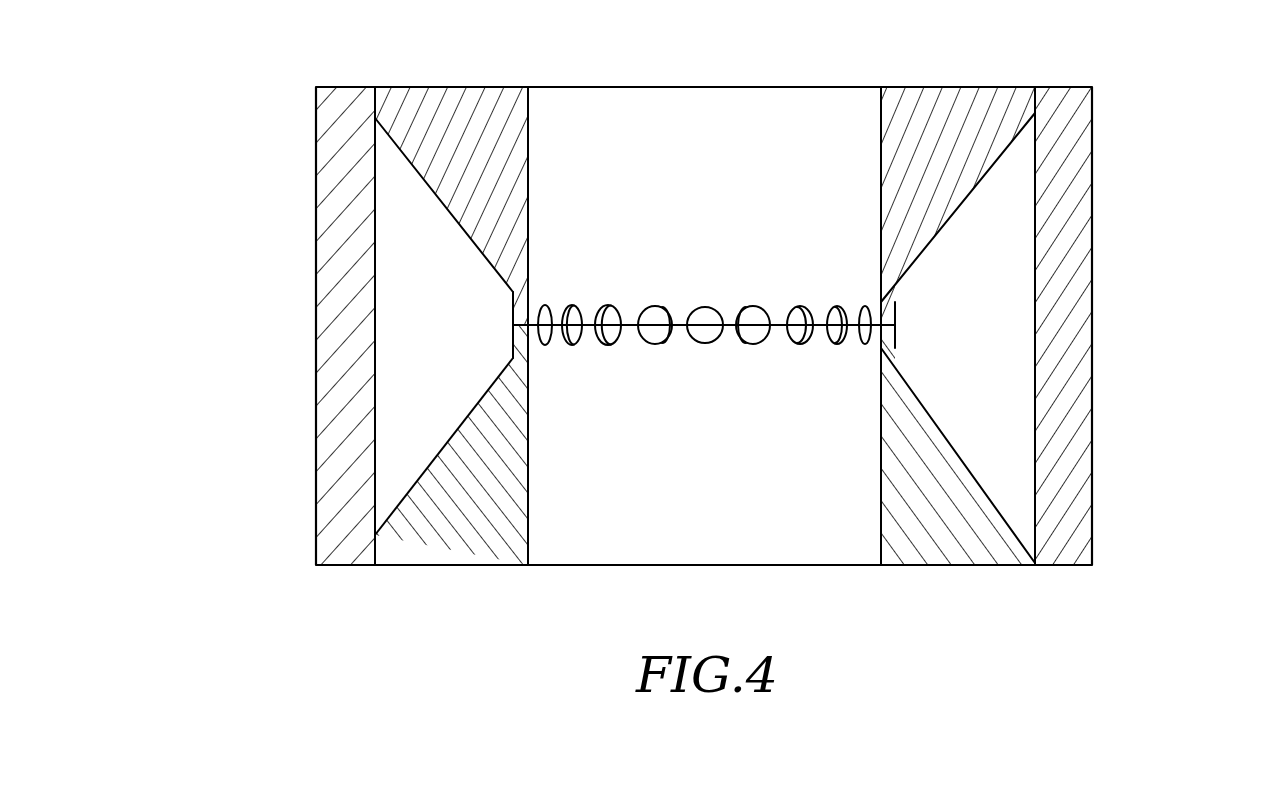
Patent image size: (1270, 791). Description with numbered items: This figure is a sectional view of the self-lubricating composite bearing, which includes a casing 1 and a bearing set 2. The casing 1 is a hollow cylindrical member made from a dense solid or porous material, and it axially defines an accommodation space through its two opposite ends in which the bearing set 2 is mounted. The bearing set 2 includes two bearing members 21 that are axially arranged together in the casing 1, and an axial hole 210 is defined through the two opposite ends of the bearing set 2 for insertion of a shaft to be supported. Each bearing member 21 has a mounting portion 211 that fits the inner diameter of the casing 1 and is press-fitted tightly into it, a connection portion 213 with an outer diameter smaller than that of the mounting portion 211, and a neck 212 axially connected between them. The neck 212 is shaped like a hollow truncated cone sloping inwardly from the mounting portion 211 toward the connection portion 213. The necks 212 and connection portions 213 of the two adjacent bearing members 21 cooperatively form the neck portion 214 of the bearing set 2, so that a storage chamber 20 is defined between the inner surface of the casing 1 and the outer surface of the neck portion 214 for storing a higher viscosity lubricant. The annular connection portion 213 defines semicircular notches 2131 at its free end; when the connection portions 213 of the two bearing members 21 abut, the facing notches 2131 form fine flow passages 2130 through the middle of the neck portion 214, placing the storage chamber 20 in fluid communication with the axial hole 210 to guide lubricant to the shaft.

The casing 1 is at (1070, 150).
The bearing set 2 is at (355, 326).
The storage chamber 20 is at (400, 476).
The bearing member 21 is at (500, 180).
The axial hole 210 is at (672, 148).
The mounting portion 211 is at (930, 87).
The neck 212 is at (978, 192).
The connection portion 213 is at (895, 307).
The neck portion 214 is at (1070, 338).
The fine flow passage 2130 is at (705, 348).
The semicircular notch 2131 is at (750, 307).